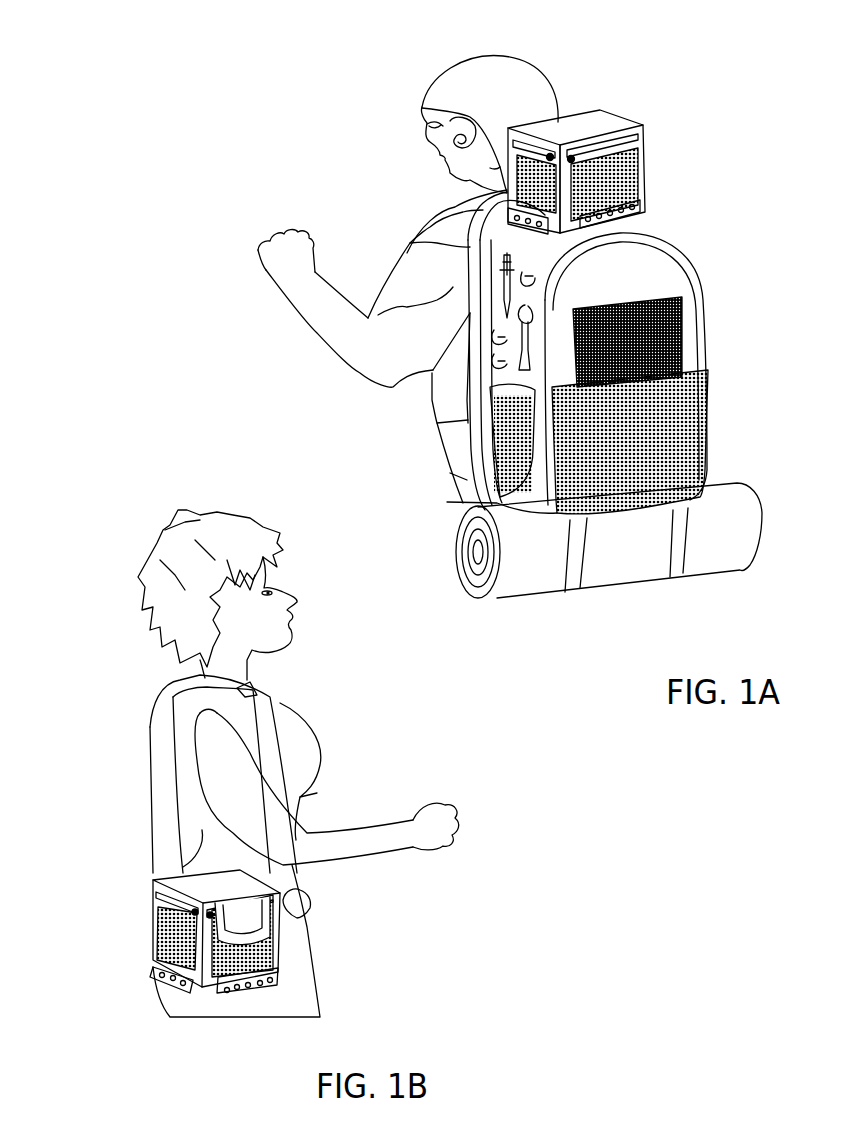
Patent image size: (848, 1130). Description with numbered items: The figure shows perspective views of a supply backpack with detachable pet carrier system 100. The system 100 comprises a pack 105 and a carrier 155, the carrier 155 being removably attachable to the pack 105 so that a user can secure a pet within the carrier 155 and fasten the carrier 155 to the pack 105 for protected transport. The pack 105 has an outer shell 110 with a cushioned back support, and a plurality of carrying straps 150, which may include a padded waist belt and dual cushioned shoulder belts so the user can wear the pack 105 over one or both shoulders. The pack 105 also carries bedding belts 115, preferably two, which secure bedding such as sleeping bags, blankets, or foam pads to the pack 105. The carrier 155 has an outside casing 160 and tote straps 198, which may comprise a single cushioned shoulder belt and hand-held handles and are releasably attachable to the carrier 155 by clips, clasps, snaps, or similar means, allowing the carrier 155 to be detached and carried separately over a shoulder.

In FIG. 1A, the supply backpack with detachable pet carrier system 100 is at (238, 128).
In FIG. 1A, the pack 105 is at (710, 248).
In FIG. 1A, the outer shell 110 is at (700, 330).
In FIG. 1A, the bedding belt 115 is at (563, 600).
In FIG. 1A, the carrying strap 150 is at (447, 205).
In FIG. 1A, the carrier 155 is at (625, 98).
In FIG. 1B, the outside casing 160 is at (143, 913).
In FIG. 1B, the tote strap 198 is at (152, 682).